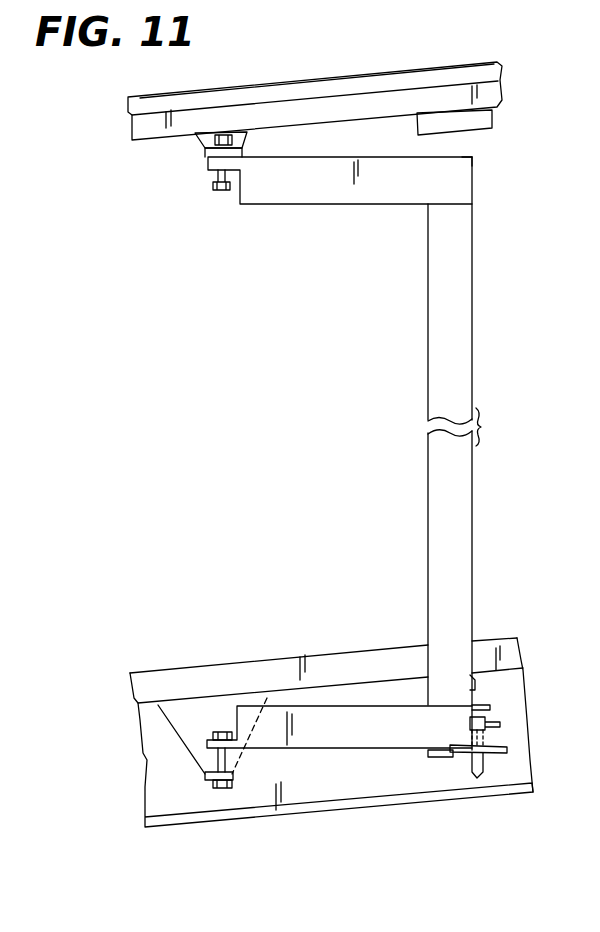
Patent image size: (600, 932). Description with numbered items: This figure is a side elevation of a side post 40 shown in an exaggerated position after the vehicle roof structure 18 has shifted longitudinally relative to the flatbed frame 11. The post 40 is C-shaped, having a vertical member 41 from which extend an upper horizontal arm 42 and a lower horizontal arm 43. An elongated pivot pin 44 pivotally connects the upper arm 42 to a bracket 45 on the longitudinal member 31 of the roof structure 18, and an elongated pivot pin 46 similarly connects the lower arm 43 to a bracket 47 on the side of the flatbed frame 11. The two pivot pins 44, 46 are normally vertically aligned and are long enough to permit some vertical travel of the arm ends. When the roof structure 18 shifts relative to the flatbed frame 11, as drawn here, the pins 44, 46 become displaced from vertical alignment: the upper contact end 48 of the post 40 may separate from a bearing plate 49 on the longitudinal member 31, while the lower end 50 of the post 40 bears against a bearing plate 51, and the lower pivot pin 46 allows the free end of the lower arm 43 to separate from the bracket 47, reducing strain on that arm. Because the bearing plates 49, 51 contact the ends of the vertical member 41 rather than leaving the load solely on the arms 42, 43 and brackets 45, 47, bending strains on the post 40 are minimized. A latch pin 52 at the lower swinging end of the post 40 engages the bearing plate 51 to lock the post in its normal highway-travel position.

The flatbed frame 11 is at (177, 802).
The roof structure 18 is at (400, 70).
The longitudinal member 31 is at (203, 93).
The post 40 is at (428, 473).
The vertical member 41 is at (428, 271).
The upper horizontal arm 42 is at (307, 206).
The lower horizontal arm 43 is at (353, 702).
The pivot pin 44 is at (213, 176).
The bracket 45 is at (200, 147).
The pivot pin 46 is at (203, 779).
The bracket 47 is at (203, 768).
The upper contact end 48 is at (462, 157).
The bearing plate 49 is at (425, 125).
The lower end 50 is at (450, 753).
The bearing plate 51 is at (461, 753).
The latch pin 52 is at (505, 757).